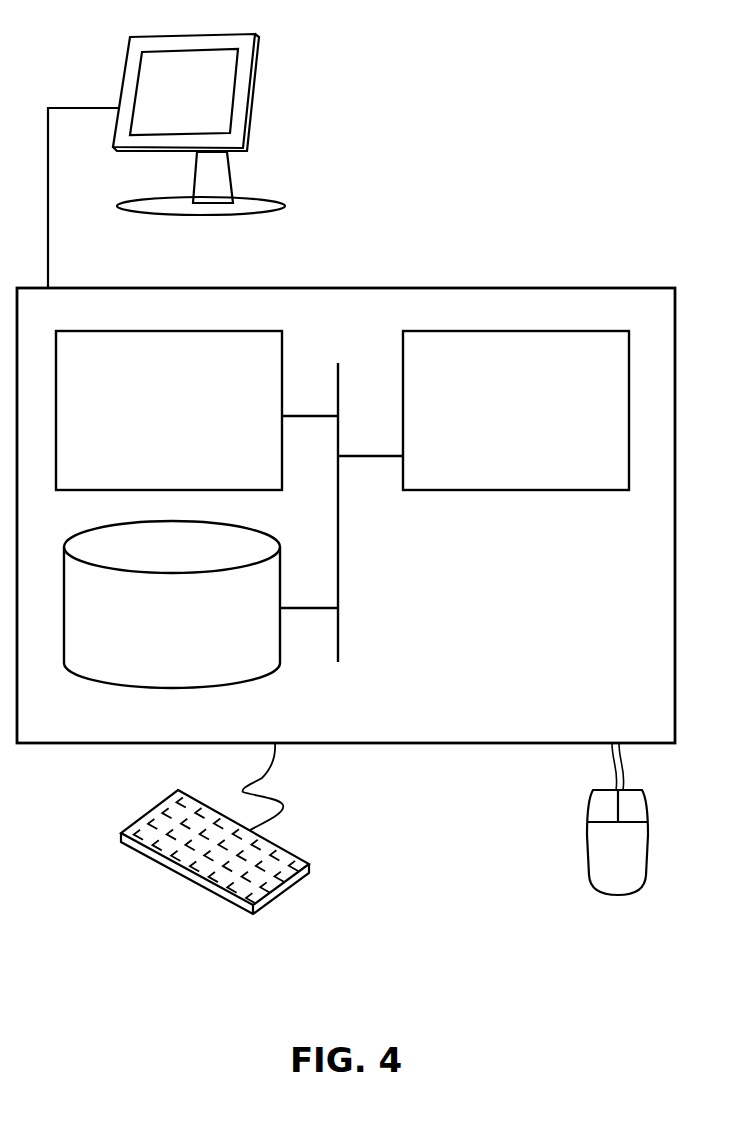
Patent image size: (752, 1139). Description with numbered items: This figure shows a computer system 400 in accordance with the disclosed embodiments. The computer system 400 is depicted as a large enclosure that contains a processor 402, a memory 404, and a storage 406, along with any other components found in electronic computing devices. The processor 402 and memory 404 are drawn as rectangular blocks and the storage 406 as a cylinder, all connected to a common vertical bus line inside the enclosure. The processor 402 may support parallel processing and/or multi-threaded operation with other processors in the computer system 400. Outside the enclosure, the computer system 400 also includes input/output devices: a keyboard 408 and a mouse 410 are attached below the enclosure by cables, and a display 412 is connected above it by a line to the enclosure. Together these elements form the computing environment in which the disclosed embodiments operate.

The computer system 400 is at (393, 267).
The processor 402 is at (498, 422).
The memory 404 is at (149, 422).
The storage 406 is at (155, 634).
The keyboard 408 is at (138, 852).
The mouse 410 is at (596, 864).
The display 412 is at (166, 161).